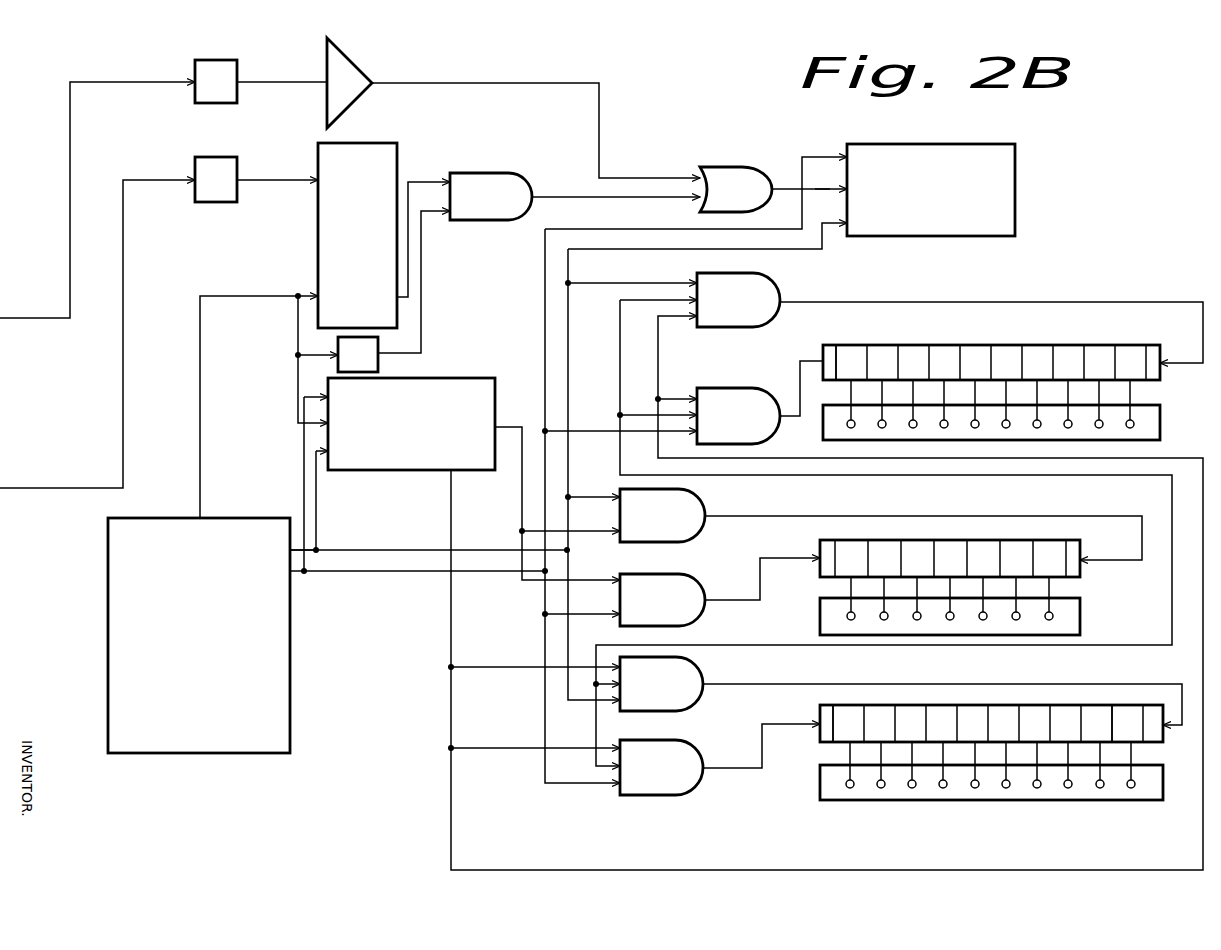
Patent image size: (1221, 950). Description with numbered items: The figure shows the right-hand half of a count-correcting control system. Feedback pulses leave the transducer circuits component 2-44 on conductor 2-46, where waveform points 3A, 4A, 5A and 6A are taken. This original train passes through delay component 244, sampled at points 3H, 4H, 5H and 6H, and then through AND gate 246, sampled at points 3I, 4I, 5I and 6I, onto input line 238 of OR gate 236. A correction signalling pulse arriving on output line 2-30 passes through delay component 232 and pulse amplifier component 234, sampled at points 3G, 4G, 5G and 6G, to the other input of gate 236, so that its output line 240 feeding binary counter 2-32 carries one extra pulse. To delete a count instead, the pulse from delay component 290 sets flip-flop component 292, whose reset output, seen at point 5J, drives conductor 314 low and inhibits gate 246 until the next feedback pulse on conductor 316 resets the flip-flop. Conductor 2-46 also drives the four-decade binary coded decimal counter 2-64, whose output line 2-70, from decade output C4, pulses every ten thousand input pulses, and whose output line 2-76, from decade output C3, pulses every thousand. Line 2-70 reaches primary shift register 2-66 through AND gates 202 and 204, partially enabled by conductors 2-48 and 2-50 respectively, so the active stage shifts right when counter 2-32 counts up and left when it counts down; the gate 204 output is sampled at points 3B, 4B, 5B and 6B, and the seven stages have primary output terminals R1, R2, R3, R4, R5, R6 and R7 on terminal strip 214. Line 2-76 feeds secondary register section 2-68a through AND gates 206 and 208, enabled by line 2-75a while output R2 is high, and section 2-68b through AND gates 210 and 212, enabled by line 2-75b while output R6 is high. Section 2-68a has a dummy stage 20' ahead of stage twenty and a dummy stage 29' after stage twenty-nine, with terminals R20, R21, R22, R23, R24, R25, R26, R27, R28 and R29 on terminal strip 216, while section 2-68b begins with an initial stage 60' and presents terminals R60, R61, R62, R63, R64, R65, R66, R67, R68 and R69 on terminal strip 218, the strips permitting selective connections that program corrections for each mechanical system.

The output line 2-30 is at (14, 322).
The delay component 232 is at (230, 40).
The waveform reference point 3G is at (252, 82).
The waveform reference point 4G is at (310, 82).
The pulse amplifier component 234 is at (355, 62).
The waveform reference point 3H is at (510, 60).
The waveform reference point 4H is at (585, 62).
The delay component 290 is at (238, 140).
The waveform reference point 5G is at (254, 180).
The waveform reference point 6G is at (308, 180).
The flip-flop component 292 is at (378, 143).
The waveform reference point 5J is at (418, 182).
The conductor 314 is at (442, 182).
The AND gate 246 is at (512, 222).
The waveform reference point 5H is at (424, 280).
The waveform reference point 6H is at (424, 302).
The waveform reference point 5I is at (546, 197).
The waveform reference point 6I is at (582, 197).
The input line 238 is at (634, 197).
The OR gate 236 is at (722, 167).
The waveform reference point 3I is at (785, 187).
The waveform reference point 4I is at (800, 187).
The output line 240 is at (822, 188).
The binary counter 2-32 is at (1015, 196).
The conductor 2-46 is at (296, 293).
The conductor 316 is at (298, 292).
The waveform reference point 3A is at (298, 318).
The waveform reference point 4A is at (298, 335).
The waveform reference point 5A is at (298, 370).
The waveform reference point 6A is at (298, 392).
The delay component 244 is at (378, 366).
The binary coded decimal counter 2-64 is at (328, 437).
The output line 2-70 is at (510, 427).
The fourth-decade output C4 is at (532, 595).
The conductor 2-50 is at (495, 548).
The conductor 2-48 is at (492, 573).
The transducer circuits component 2-44 is at (292, 728).
The output line 2-76 is at (451, 638).
The third-decade output C3 is at (522, 749).
The AND gate 212 is at (782, 322).
The AND gate 210 is at (740, 388).
The secondary shift register section 2-68b is at (1160, 328).
The register stage 60 60' is at (822, 361).
The terminal strip 218 is at (1160, 415).
The terminal R60 is at (847, 428).
The terminal R61 is at (878, 428).
The terminal R62 is at (909, 428).
The terminal R63 is at (944, 428).
The terminal R64 is at (977, 428).
The terminal R65 is at (1009, 428).
The terminal R66 is at (1040, 428).
The terminal R67 is at (1071, 428).
The terminal R68 is at (1103, 427).
The terminal R69 is at (1134, 424).
The AND gate 204 is at (698, 495).
The waveform reference point 4B is at (745, 516).
The waveform reference point 6B is at (866, 500).
The primary shift register 2-66 is at (855, 540).
The waveform reference point 3B is at (715, 600).
The waveform reference point 5B is at (735, 600).
The AND gate 202 is at (704, 618).
The terminal strip 214 is at (1080, 610).
The primary output terminal R1 is at (848, 620).
The primary output terminal R2 is at (881, 620).
The primary output terminal R3 is at (915, 620).
The primary output terminal R4 is at (948, 620).
The primary output terminal R5 is at (980, 620).
The primary output terminal R6 is at (1014, 620).
The primary output terminal R7 is at (1050, 620).
The enable line 2-75a is at (722, 645).
The enable line 2-75b is at (1152, 632).
The AND gate 208 is at (672, 711).
The AND gate 206 is at (672, 795).
The secondary shift register section 2-68a is at (1150, 690).
The dummy stage 20' is at (821, 734).
The dummy stage 29' is at (1151, 734).
The terminal strip 216 is at (820, 780).
The terminal R20 is at (846, 788).
The terminal R21 is at (878, 788).
The terminal R22 is at (909, 788).
The terminal R23 is at (942, 788).
The terminal R24 is at (973, 788).
The terminal R25 is at (1006, 788).
The terminal R26 is at (1036, 788).
The terminal R27 is at (1068, 788).
The terminal R28 is at (1098, 788).
The terminal R29 is at (1131, 788).